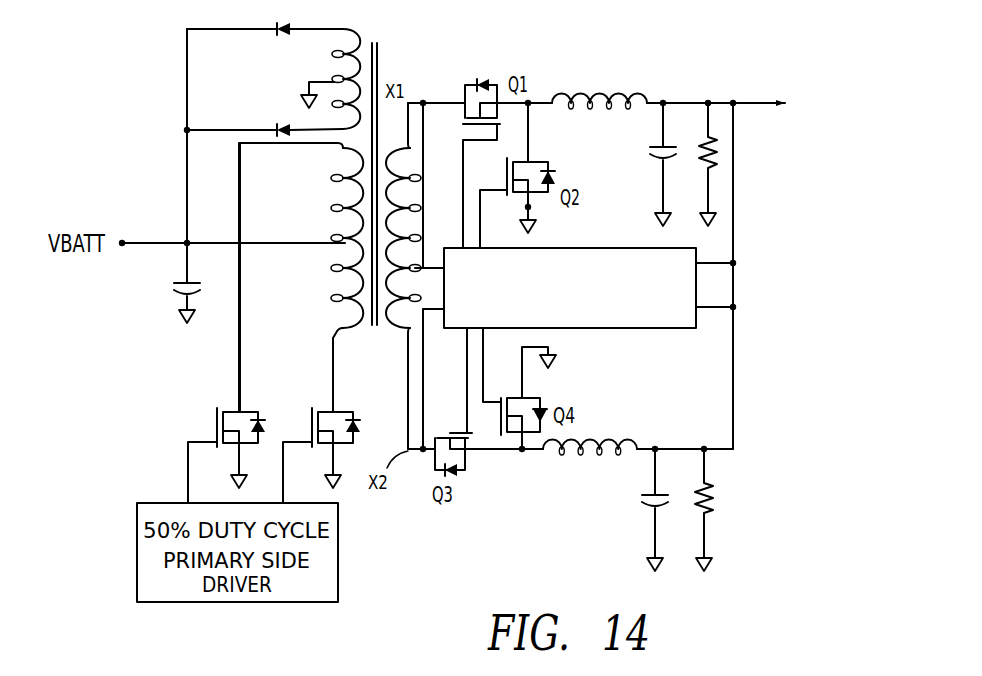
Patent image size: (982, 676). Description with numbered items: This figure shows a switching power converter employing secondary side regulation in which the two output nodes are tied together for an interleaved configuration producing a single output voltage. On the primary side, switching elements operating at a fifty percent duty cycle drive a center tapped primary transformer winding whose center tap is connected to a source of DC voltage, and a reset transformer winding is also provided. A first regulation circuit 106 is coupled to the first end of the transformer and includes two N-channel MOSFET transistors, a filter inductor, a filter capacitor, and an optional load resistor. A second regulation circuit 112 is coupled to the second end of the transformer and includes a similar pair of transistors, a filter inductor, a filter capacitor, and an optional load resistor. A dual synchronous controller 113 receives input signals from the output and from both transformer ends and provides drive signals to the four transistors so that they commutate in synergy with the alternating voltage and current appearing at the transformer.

The first regulation circuit 106 is at (682, 73).
The second regulation circuit 112 is at (633, 423).
The dual synchronous controller 113 is at (618, 328).